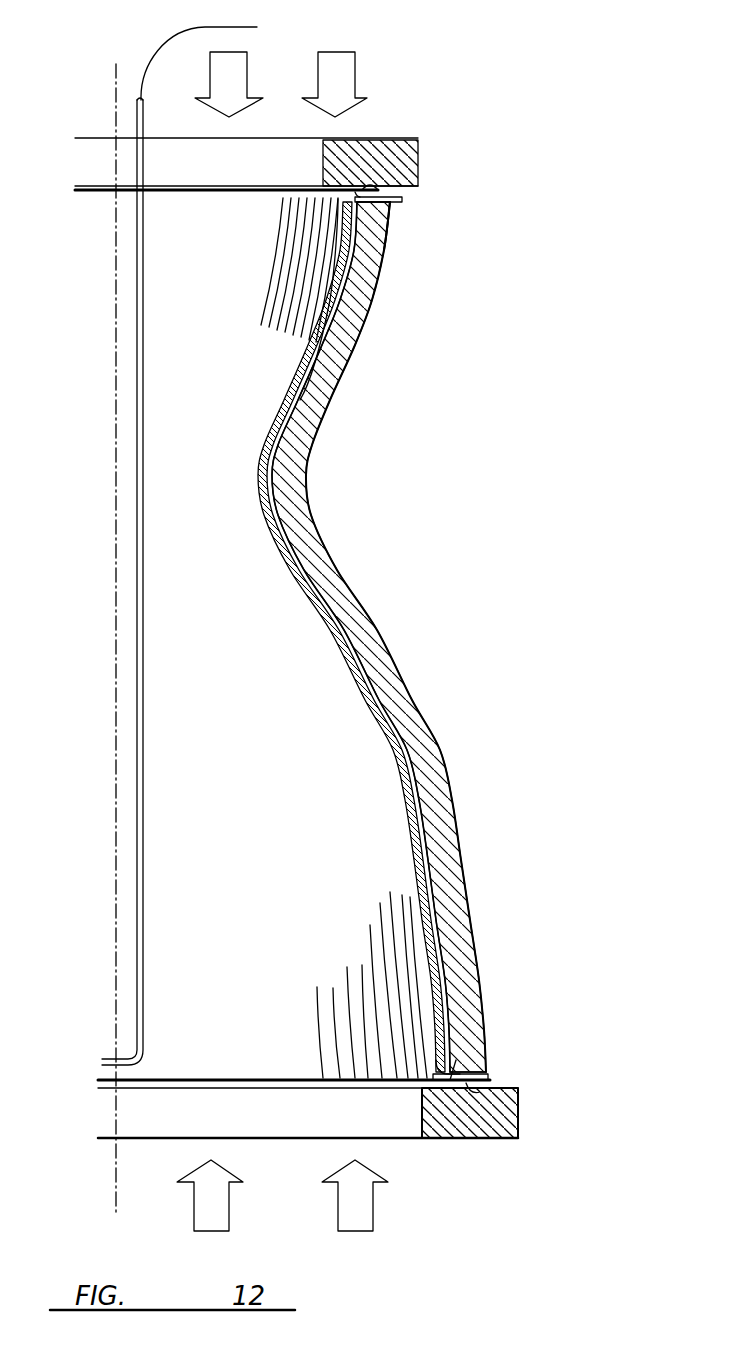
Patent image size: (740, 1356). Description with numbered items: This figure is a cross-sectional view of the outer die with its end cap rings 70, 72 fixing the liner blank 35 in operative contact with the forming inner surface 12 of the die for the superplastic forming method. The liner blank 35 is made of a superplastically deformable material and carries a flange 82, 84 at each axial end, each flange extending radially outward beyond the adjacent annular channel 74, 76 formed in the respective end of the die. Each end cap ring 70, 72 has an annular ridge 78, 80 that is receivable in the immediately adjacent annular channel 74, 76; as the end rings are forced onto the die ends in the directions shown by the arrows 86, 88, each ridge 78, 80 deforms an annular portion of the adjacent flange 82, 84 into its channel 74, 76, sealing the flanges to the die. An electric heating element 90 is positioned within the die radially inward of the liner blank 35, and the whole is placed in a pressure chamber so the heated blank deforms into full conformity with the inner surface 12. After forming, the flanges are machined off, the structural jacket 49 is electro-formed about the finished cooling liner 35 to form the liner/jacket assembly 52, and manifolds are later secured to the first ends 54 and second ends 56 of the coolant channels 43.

The inner surface 12 is at (396, 637).
The liner blank 35 is at (258, 493).
The channels 43 is at (331, 339).
The structural jacket 49 is at (311, 424).
The finished cooling liner/structural jacket assembly 52 is at (396, 637).
The first ends 54 is at (384, 246).
The second ends 56 is at (454, 1049).
The end cap ring 70 is at (402, 139).
The end cap ring 72 is at (500, 1138).
The annular channel 74 is at (391, 216).
The annular channel 76 is at (468, 1076).
The annular ridge 78 is at (378, 190).
The annular ridge 80 is at (470, 1088).
The flange 82 is at (357, 196).
The flange 84 is at (455, 1060).
The arrow 86 is at (250, 65).
The arrow 88 is at (338, 1212).
The electric heating element 90 is at (172, 47).